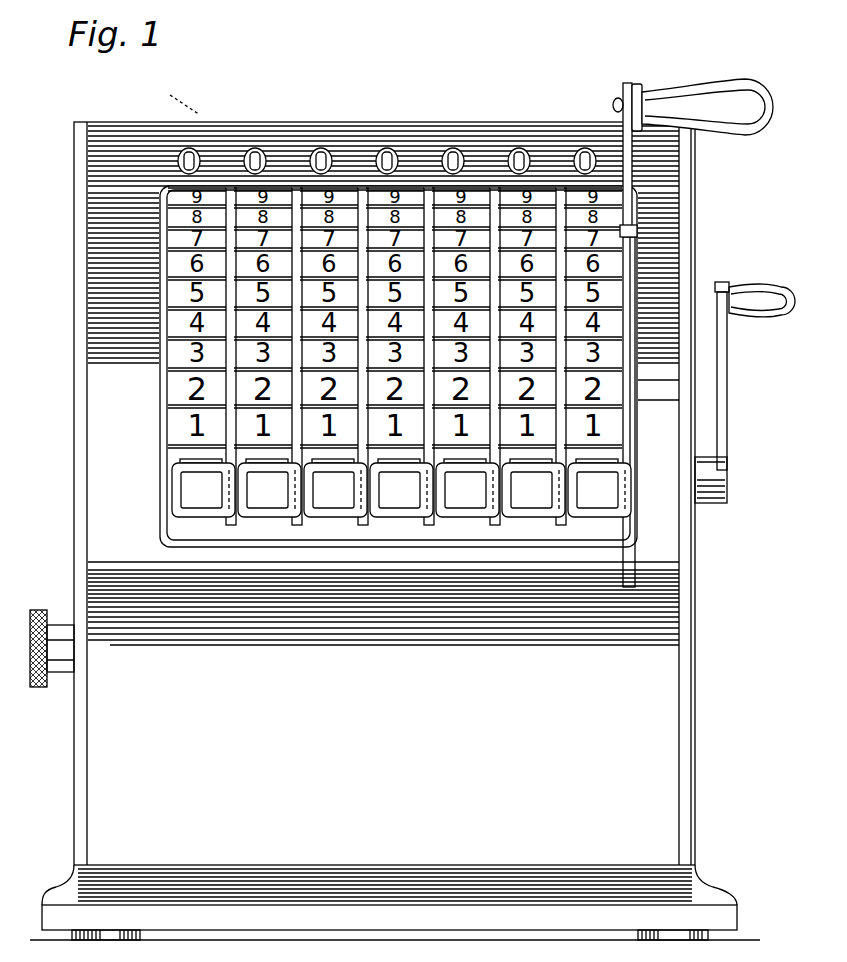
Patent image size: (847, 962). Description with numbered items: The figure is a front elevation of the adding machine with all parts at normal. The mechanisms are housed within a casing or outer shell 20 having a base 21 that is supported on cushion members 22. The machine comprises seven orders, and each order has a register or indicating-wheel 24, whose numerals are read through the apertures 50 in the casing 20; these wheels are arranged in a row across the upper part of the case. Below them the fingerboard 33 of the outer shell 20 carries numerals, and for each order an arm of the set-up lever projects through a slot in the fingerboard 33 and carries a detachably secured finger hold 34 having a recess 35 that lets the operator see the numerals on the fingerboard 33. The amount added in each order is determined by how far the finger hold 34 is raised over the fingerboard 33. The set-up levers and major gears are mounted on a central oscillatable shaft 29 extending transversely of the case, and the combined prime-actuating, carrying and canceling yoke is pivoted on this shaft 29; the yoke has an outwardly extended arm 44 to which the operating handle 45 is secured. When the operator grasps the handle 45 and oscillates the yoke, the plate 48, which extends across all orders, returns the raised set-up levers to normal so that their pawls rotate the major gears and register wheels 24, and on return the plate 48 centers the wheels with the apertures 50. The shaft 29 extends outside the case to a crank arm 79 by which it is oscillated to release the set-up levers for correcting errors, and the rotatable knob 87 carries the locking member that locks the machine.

The casing or outer shell 20 is at (110, 126).
The base 21 is at (66, 889).
The cushion members 22 is at (131, 941).
The register or indicating-wheel 24 is at (466, 148).
The central oscillatable shaft 29 is at (703, 503).
The fingerboard 33 is at (172, 395).
The finger hold 34 is at (176, 466).
The recess 35 is at (266, 500).
The outwardly extended arm 44 is at (634, 170).
The operating handle 45 is at (736, 82).
The plate 48 is at (640, 230).
The apertures 50 is at (578, 152).
The crank arm 79 is at (762, 284).
The rotatable knob 87 is at (56, 673).